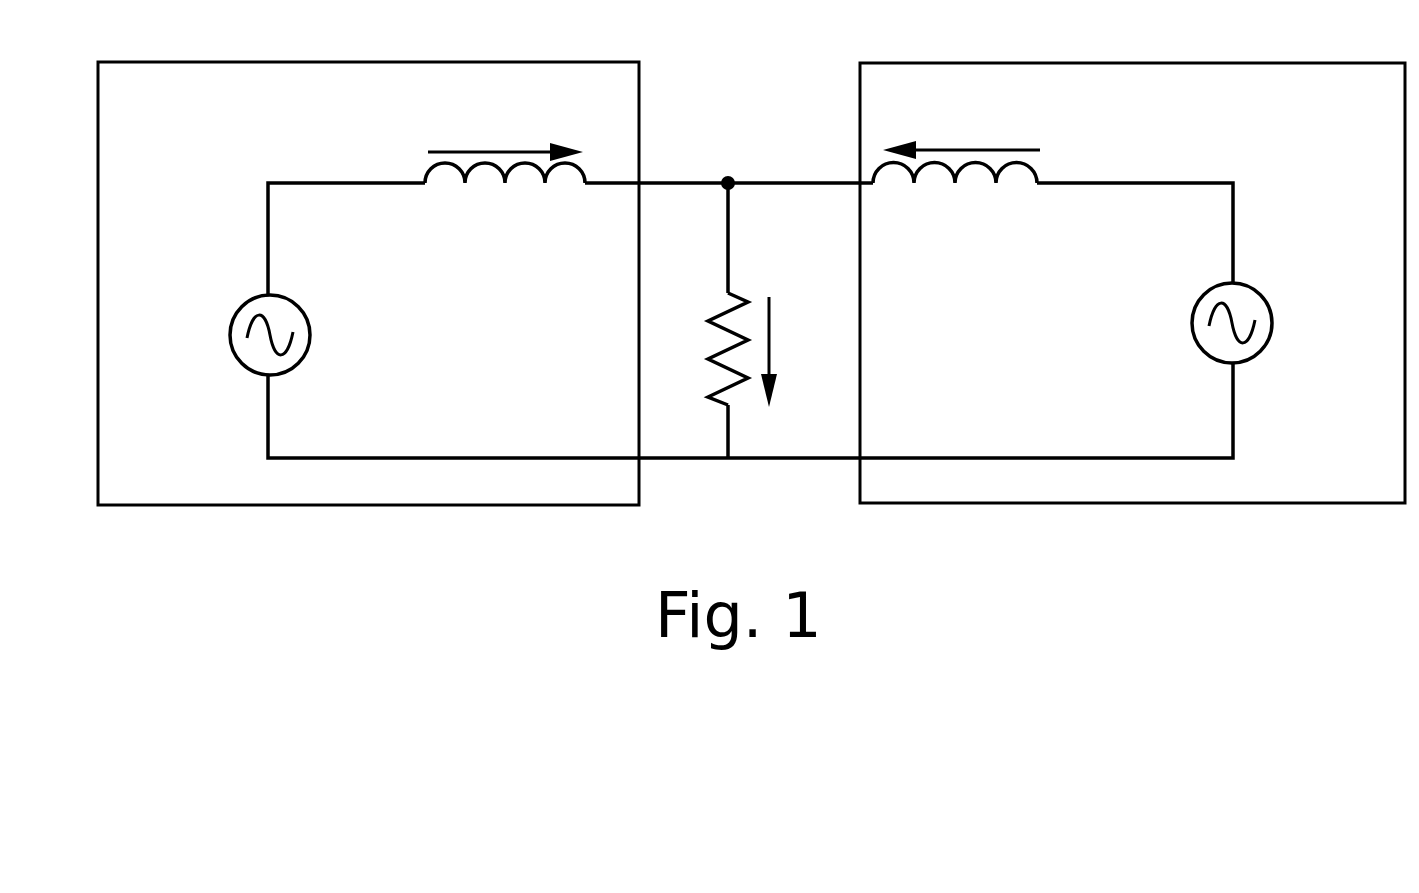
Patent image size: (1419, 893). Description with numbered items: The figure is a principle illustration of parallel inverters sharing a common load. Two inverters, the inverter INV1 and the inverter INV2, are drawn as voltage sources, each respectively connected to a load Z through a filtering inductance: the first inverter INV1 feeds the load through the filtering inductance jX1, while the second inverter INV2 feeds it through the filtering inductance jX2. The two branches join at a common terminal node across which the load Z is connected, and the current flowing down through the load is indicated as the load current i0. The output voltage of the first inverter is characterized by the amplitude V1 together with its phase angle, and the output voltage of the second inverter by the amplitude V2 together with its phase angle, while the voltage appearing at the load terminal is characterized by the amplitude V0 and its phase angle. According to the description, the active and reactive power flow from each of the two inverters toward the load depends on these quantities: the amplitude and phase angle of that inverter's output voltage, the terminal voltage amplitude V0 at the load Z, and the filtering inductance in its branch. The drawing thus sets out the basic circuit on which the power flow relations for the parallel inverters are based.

The inverter INV1 is at (368, 283).
The inverter INV2 is at (1132, 283).
The filtering inductance jX1 is at (505, 203).
The filtering inductance jX2 is at (956, 200).
The load Z is at (703, 349).
The load current i0 is at (799, 352).
The amplitude of the terminal voltage from the load V0 is at (733, 149).
The amplitude of the output voltage from the first inverter V1 is at (209, 335).
The amplitude of the output voltage from the second inverter V2 is at (1305, 323).